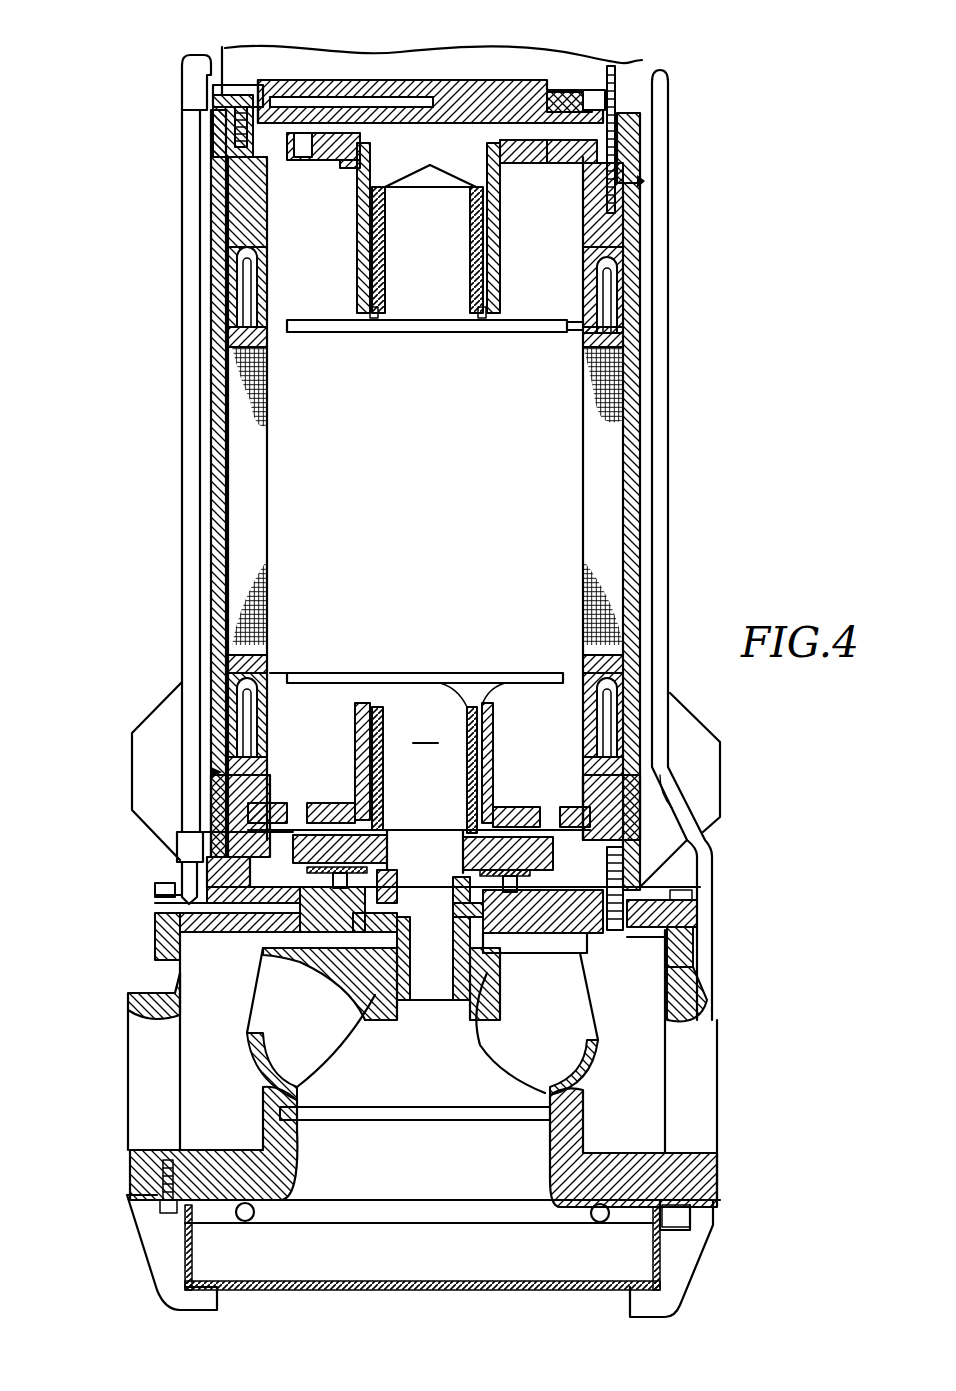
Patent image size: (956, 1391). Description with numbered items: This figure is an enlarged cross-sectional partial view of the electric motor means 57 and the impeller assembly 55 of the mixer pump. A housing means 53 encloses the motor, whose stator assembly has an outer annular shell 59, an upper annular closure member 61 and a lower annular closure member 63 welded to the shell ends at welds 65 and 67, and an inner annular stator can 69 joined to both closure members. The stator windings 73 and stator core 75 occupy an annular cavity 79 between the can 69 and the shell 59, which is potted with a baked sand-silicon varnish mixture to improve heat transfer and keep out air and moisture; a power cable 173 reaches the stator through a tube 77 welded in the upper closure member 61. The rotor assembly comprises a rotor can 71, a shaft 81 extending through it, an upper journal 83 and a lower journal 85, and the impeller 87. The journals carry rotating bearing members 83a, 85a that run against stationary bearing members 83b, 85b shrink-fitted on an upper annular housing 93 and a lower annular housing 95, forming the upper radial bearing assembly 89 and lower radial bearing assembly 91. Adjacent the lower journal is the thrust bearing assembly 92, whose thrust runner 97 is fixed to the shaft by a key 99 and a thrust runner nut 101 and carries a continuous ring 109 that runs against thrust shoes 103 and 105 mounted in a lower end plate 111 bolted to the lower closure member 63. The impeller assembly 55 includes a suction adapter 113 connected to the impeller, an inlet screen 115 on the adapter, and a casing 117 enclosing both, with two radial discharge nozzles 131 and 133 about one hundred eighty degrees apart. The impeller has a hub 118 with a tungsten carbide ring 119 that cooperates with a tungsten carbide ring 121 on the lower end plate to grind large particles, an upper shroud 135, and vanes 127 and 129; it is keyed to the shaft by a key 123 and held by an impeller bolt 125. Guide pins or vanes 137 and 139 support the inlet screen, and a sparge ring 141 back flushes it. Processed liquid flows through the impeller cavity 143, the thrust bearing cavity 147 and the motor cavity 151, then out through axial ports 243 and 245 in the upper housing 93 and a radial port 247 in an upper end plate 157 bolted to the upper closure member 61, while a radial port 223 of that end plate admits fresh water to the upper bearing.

The housing means 53 is at (693, 422).
The impeller assembly 55 is at (112, 1053).
The electric motor means 57 is at (208, 410).
The outer annular shell 59 is at (643, 540).
The upper annular closure member 61 is at (640, 143).
The lower annular closure member 63 is at (640, 810).
The weld 65 is at (646, 182).
The weld 67 is at (640, 773).
The inner annular stator can 69 is at (268, 302).
The rotor can 71 is at (560, 523).
The stator windings 73 is at (597, 282).
The stator core 75 is at (593, 603).
The tube 77 is at (641, 107).
The annular cavity 79 is at (211, 205).
The shaft 81 is at (370, 693).
The upper journal 83 is at (423, 228).
The rotating bearing member 83a is at (477, 191).
The stationary bearing member 83b is at (376, 190).
The lower journal 85 is at (424, 770).
The rotating bearing member 85a is at (468, 705).
The stationary bearing member 85b is at (497, 677).
The impeller 87 is at (593, 1050).
The radial bearing assembly 89 is at (500, 283).
The radial bearing assembly 91 is at (352, 727).
The thrust bearing assembly 92 is at (570, 862).
The annular housing 93 is at (284, 155).
The annular housing 95 is at (337, 806).
The thrust runner 97 is at (297, 857).
The key 99 is at (423, 832).
The thrust runner nut 101 is at (433, 958).
The thrust shoe 103 is at (508, 928).
The thrust shoe 105 is at (306, 868).
The continuous ring 109 is at (317, 855).
The lower end plate 111 is at (588, 936).
The suction adapter 113 is at (557, 1177).
The inlet screen 115 is at (333, 1288).
The casing 117 is at (128, 1010).
The impeller hub 118 is at (440, 918).
The tungsten carbide ring 119 is at (347, 975).
The tungsten carbide ring 121 is at (330, 958).
The key 123 is at (377, 982).
The impeller bolt 125 is at (420, 1022).
The vane 127 is at (573, 955).
The vane 129 is at (263, 947).
The radial discharge nozzle 131 is at (697, 1077).
The radial discharge nozzle 133 is at (128, 1110).
The upper shroud 135 is at (497, 963).
The guide pin 137 is at (687, 1250).
The guide pin 139 is at (157, 1270).
The sparge ring 141 is at (310, 1217).
The impeller cavity 143 is at (655, 1087).
The thrust bearing cavity 147 is at (583, 807).
The motor cavity 151 is at (560, 710).
The upper end plate 157 is at (473, 87).
The power cable 173 is at (612, 78).
The radial port 223 is at (323, 97).
The axial port 243 is at (557, 152).
The axial port 245 is at (304, 148).
The radial port 247 is at (565, 97).